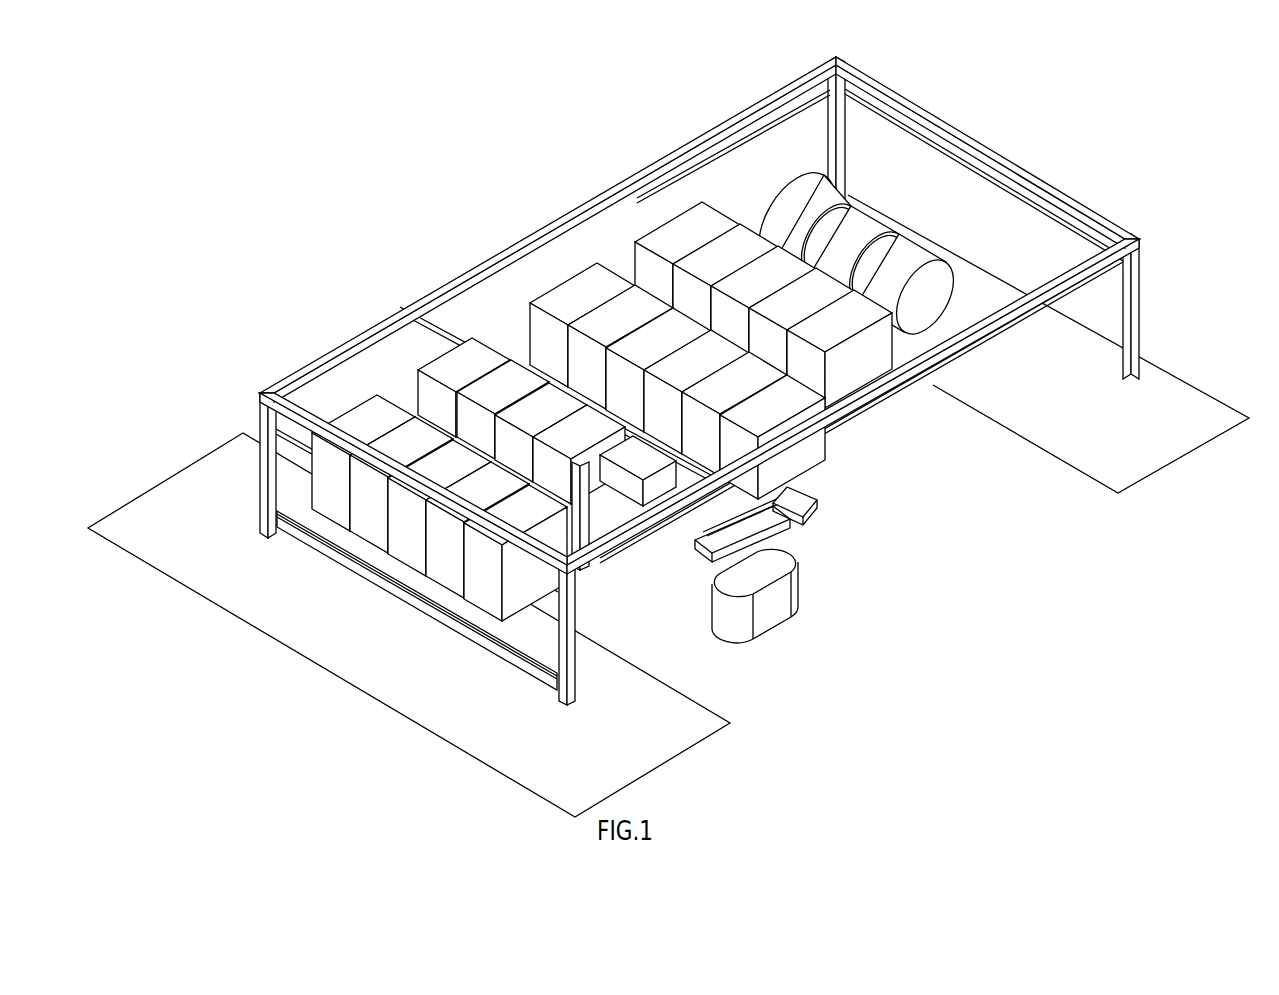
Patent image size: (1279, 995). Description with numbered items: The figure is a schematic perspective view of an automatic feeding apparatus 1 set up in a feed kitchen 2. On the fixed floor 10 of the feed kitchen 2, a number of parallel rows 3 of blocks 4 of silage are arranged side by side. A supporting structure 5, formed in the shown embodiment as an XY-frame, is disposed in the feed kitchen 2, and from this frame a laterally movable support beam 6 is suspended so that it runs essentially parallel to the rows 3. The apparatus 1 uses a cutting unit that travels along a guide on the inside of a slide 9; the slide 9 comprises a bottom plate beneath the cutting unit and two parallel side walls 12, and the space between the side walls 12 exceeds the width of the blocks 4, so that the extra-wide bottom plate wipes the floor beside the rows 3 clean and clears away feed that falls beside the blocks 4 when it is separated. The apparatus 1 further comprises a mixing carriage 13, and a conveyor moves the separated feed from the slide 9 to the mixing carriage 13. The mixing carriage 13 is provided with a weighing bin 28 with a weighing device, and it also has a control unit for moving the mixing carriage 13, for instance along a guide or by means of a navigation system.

The automatic feeding apparatus 1 is at (668, 437).
The feed kitchen 2 is at (233, 255).
The parallel rows 3 is at (662, 318).
The blocks 4 is at (750, 422).
The supporting structure 5 is at (1075, 198).
The support beam 6 is at (500, 328).
The slide 9 is at (628, 583).
The fixed floor 10 is at (407, 682).
The side walls 12 is at (652, 558).
The mixing carriage 13 is at (796, 619).
The weighing bin 28 is at (790, 598).